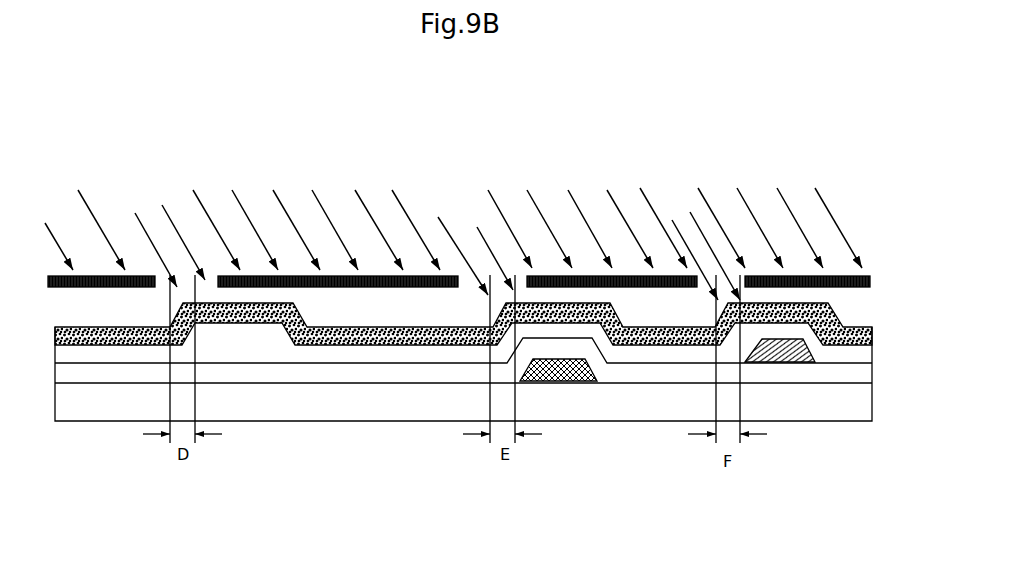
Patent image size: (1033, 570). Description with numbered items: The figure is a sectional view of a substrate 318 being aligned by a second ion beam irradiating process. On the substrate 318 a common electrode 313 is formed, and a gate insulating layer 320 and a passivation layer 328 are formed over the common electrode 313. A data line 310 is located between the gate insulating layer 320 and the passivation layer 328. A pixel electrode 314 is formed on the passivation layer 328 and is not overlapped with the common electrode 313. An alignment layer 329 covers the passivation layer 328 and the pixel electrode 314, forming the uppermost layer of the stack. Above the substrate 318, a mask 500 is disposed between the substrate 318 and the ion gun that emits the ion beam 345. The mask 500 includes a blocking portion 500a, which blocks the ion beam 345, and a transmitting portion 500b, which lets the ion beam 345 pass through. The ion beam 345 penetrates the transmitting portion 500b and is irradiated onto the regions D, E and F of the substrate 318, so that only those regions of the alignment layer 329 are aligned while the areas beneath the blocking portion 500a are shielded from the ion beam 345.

The mask 500 is at (459, 178).
The blocking portion 500a is at (338, 275).
The transmitting portion 500b is at (482, 273).
The ion beam 345 is at (710, 205).
The alignment layer 329 is at (872, 329).
The passivation layer 328 is at (865, 351).
The gate insulating layer 320 is at (865, 374).
The substrate 318 is at (865, 407).
The pixel electrode 314 is at (237, 335).
The common electrode 313 is at (558, 382).
The data line 310 is at (785, 360).